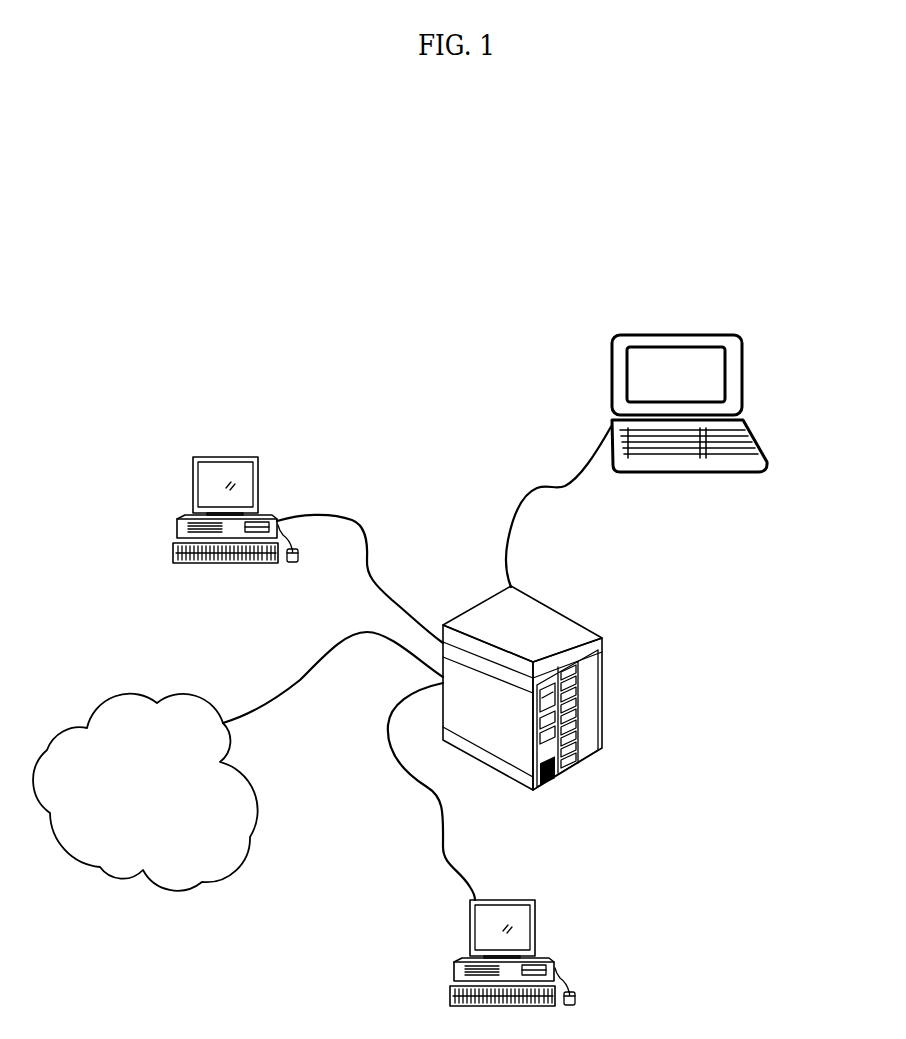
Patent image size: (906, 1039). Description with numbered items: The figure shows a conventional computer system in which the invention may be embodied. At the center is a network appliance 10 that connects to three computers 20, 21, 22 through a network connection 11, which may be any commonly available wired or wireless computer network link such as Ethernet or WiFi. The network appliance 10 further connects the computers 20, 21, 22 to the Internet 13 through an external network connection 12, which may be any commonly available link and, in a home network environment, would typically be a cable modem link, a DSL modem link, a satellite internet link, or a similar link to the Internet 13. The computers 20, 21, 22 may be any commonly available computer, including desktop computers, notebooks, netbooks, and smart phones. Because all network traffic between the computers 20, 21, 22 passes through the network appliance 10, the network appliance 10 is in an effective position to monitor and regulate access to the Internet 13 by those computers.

The network appliance 10 is at (587, 622).
The network connection 11 is at (370, 532).
The external network connection 12 is at (293, 687).
The Internet 13 is at (178, 885).
The computer 20 is at (182, 508).
The computer 21 is at (612, 383).
The computer 22 is at (502, 900).